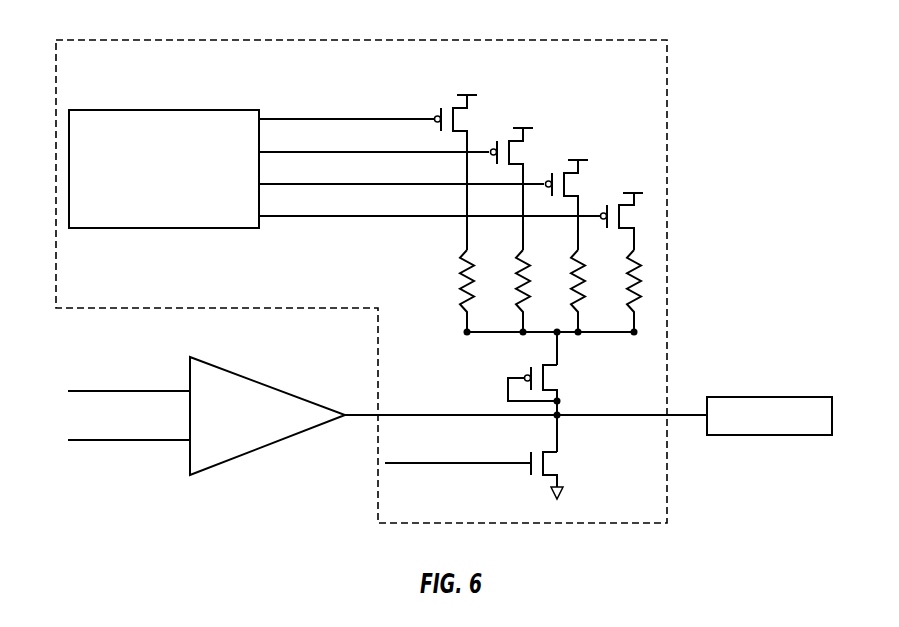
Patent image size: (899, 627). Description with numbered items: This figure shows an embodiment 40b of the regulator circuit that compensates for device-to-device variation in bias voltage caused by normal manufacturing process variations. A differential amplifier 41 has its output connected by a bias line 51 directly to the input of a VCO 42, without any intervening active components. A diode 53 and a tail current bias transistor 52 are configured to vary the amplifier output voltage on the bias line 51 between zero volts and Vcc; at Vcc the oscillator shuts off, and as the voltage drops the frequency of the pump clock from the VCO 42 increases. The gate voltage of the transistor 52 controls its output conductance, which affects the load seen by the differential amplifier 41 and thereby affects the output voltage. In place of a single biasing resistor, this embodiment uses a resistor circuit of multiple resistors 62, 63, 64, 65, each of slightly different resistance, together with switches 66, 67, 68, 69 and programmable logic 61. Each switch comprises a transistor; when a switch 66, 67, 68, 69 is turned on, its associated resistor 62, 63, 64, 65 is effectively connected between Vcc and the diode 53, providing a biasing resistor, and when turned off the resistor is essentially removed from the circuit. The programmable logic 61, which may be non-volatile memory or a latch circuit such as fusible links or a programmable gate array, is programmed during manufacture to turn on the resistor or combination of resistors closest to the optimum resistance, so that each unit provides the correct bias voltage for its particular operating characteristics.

The regulator circuit embodiment 40b is at (357, 263).
The programmable logic 61 is at (164, 188).
The switch 66 is at (488, 155).
The switch 67 is at (542, 170).
The switch 68 is at (597, 186).
The switch 69 is at (654, 203).
The resistor 62 is at (439, 290).
The resistor 63 is at (502, 275).
The resistor 64 is at (557, 275).
The resistor 65 is at (667, 279).
The diode 53 is at (516, 396).
The tail current bias transistor 52 is at (474, 474).
The bias line 51 is at (526, 418).
The differential amplifier 41 is at (206, 398).
The VCO 42 is at (772, 436).